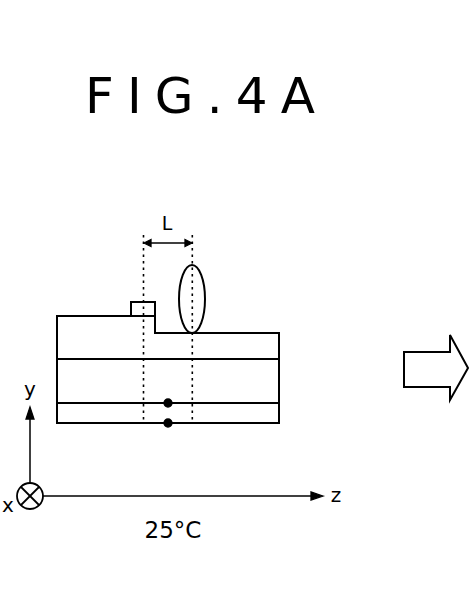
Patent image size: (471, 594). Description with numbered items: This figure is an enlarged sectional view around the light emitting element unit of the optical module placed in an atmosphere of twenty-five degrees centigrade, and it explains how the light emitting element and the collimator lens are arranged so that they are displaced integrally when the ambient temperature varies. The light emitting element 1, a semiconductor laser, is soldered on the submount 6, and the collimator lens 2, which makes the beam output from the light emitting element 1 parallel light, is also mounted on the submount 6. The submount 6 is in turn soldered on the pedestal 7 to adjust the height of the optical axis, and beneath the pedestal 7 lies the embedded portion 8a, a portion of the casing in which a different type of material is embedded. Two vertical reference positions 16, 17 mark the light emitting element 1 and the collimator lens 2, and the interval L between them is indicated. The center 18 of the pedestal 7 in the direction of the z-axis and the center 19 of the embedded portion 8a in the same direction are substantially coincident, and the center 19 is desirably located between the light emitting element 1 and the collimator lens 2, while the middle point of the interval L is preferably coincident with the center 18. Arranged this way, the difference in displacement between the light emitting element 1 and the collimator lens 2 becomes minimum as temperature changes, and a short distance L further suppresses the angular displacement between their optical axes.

The light emitting element 1 is at (135, 302).
The collimator lens 2 is at (200, 293).
The submount 6 is at (268, 345).
The pedestal 7 is at (266, 380).
The embedded portion 8a is at (268, 412).
The reference position of laser element 16 is at (145, 264).
The reference position of optical fiber 17 is at (193, 258).
The center of the pedestal 18 is at (168, 403).
The center of the embedded portion 19 is at (168, 423).